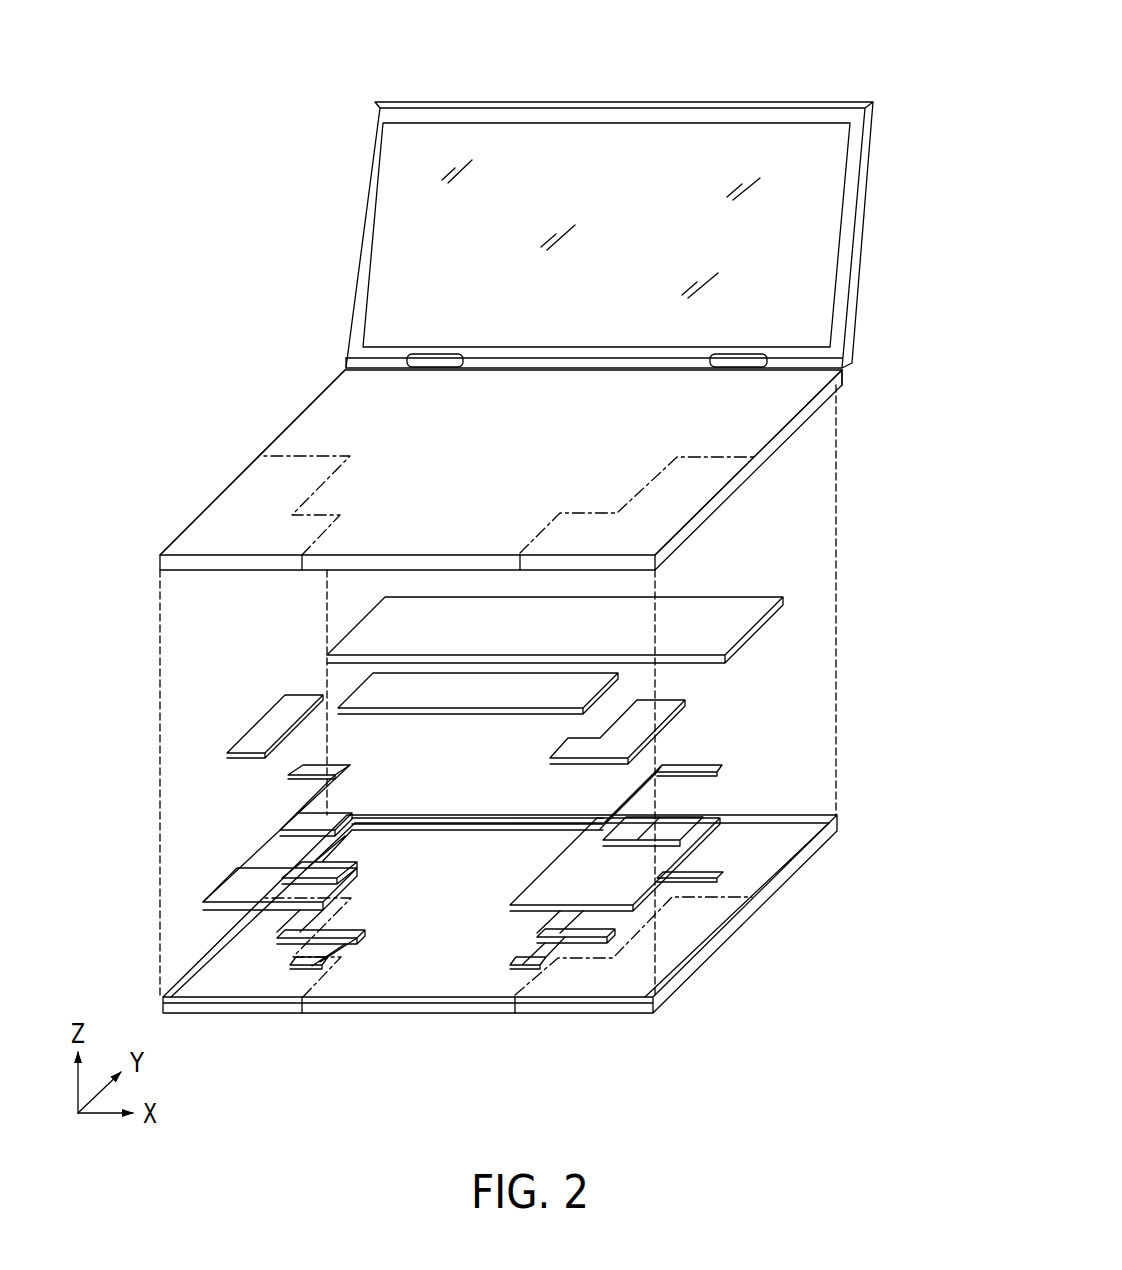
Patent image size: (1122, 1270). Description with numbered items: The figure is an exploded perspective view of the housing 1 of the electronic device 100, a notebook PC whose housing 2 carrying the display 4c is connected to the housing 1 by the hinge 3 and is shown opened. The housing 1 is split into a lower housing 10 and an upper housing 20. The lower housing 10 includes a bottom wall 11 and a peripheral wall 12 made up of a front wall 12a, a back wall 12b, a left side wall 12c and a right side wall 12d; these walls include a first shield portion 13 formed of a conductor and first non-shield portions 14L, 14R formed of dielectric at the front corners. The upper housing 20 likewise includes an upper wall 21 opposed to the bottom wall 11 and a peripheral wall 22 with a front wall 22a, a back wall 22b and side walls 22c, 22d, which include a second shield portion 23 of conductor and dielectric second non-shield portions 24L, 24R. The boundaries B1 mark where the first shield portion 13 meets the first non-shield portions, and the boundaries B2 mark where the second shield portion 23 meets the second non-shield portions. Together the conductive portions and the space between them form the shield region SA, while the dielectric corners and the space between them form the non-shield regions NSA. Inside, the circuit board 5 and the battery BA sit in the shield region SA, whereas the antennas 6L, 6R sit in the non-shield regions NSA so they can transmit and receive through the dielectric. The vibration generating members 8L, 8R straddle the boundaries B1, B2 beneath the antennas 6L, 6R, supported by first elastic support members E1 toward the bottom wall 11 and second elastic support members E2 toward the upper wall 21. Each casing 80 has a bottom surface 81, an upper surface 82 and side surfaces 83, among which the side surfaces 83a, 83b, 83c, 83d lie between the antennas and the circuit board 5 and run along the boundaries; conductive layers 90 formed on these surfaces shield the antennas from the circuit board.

The electronic device 100 is at (930, 56).
The housing 1 is at (938, 332).
The housing 2 is at (618, 225).
The hinge 3 is at (440, 356).
The display 4c is at (663, 140).
The circuit board 5 is at (712, 606).
The antenna 6L is at (283, 717).
The antenna 6R is at (672, 702).
The vibration generating member 8L is at (475, 849).
The vibration generating member 8R is at (768, 802).
The lower housing 10 is at (874, 856).
The bottom wall 11 is at (406, 1016).
The peripheral wall 12 is at (468, 930).
The front wall 12a is at (538, 1008).
The back wall 12b is at (762, 817).
The side wall 12c is at (185, 985).
The side wall 12d is at (702, 962).
The first shield portion 13 is at (433, 843).
The first non-shield portion 14L is at (256, 985).
The first non-shield portion 14R is at (600, 985).
The upper housing 20 is at (618, 225).
The upper wall 21 is at (320, 378).
The peripheral wall 22 is at (501, 463).
The front wall 22a is at (160, 570).
The back wall 22b is at (856, 370).
The side wall 22c is at (212, 497).
The side wall 22d is at (805, 407).
The second shield portion 23 is at (458, 438).
The second non-shield portion 24L is at (300, 478).
The second non-shield portion 24R is at (675, 487).
The casing 80 is at (500, 849).
The bottom surface 81 is at (222, 905).
The upper surface 82 is at (240, 876).
The side surface 83 is at (479, 836).
The side surface 83a is at (355, 882).
The side surface 83b is at (347, 867).
The side surface 83c is at (330, 858).
The side surface 83d is at (343, 803).
The conductive layer 90 is at (345, 900).
The boundary B1 is at (333, 988).
The boundary B2 is at (340, 508).
The battery BA is at (362, 690).
The first elastic support member E1 is at (278, 932).
The second elastic support member E2 is at (290, 770).
The non-shield region NSA is at (187, 618).
The shield region SA is at (810, 452).